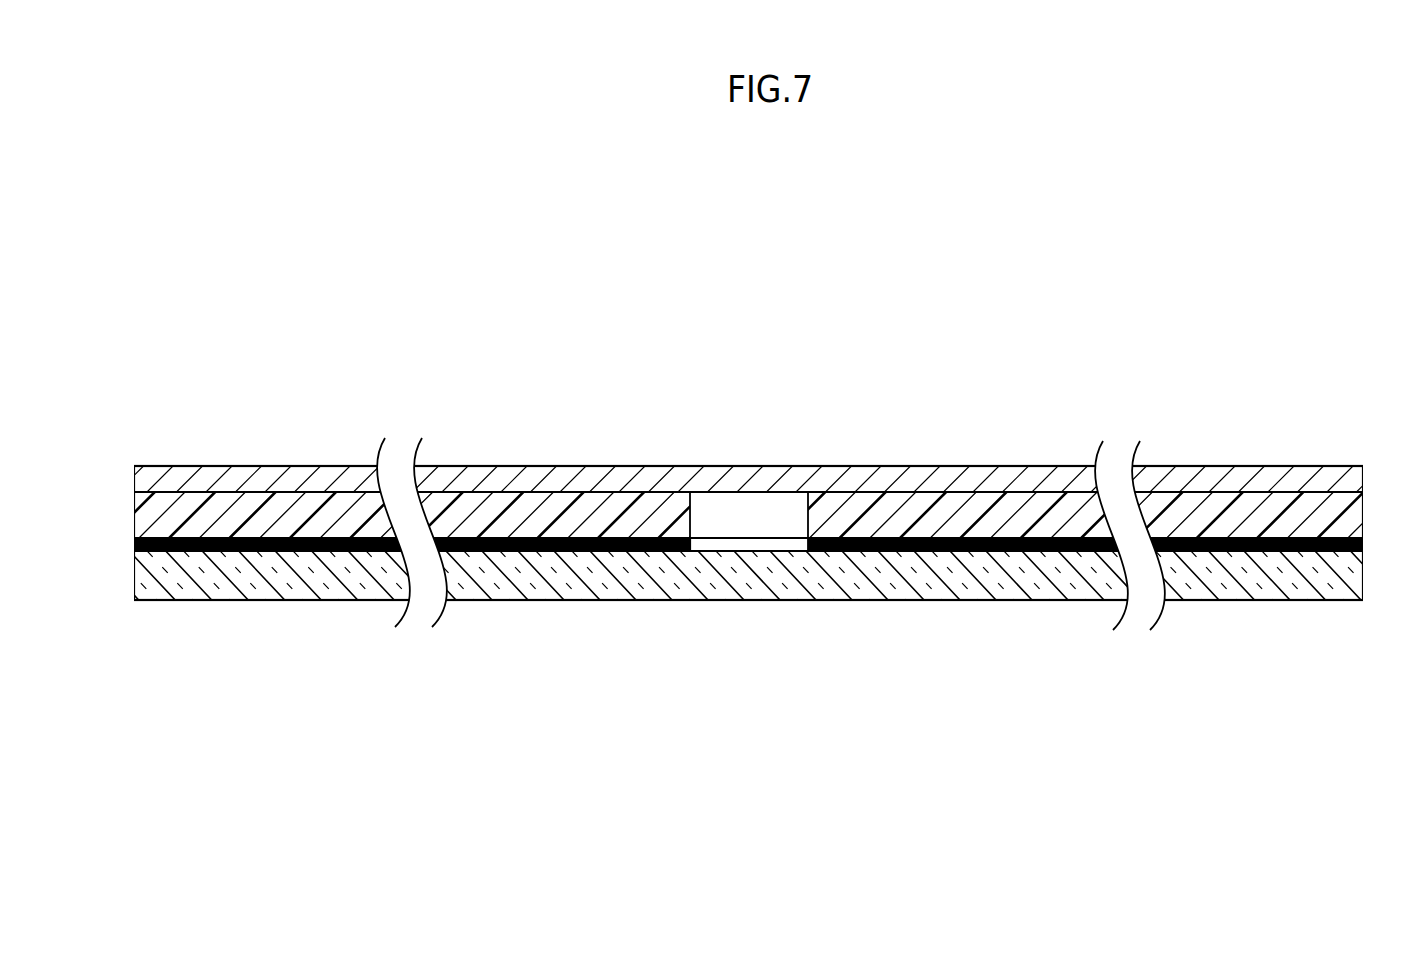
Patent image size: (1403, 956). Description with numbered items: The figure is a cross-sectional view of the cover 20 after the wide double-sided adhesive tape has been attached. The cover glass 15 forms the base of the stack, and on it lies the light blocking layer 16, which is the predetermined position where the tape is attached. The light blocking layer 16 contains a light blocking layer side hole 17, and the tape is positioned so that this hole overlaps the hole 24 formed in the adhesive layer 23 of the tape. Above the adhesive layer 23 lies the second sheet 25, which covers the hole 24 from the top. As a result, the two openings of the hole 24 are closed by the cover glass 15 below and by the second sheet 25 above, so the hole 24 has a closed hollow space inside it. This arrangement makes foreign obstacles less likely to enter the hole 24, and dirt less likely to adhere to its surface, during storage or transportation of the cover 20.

The cover 20 is at (1198, 359).
The second sheet 25 is at (1022, 478).
The adhesive layer 23 is at (910, 515).
The hole 24 is at (806, 517).
The light blocking layer side hole 17 is at (697, 546).
The light blocking layer 16 is at (1273, 549).
The cover glass 15 is at (1280, 577).